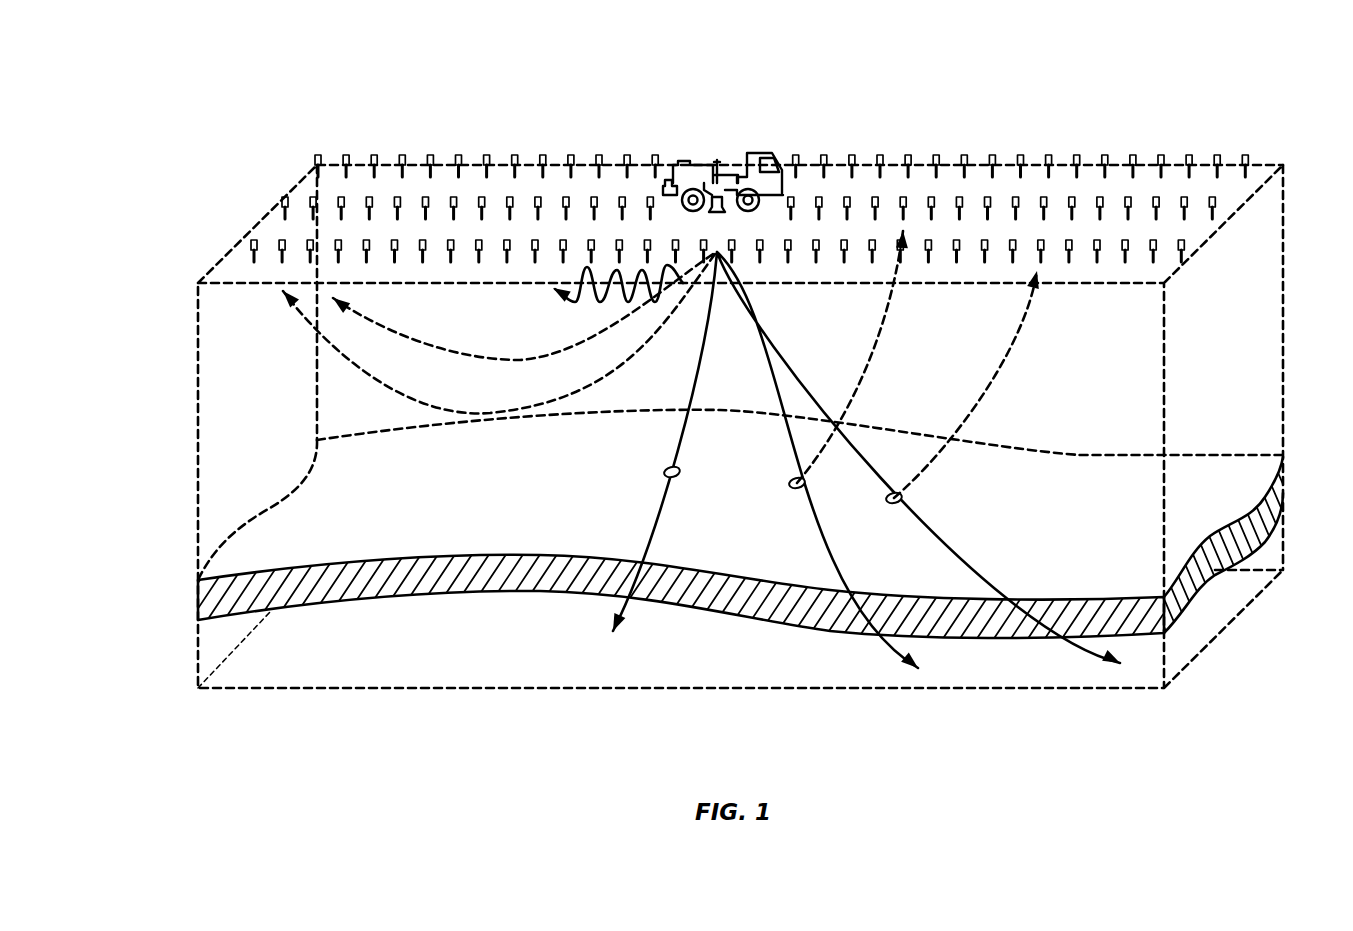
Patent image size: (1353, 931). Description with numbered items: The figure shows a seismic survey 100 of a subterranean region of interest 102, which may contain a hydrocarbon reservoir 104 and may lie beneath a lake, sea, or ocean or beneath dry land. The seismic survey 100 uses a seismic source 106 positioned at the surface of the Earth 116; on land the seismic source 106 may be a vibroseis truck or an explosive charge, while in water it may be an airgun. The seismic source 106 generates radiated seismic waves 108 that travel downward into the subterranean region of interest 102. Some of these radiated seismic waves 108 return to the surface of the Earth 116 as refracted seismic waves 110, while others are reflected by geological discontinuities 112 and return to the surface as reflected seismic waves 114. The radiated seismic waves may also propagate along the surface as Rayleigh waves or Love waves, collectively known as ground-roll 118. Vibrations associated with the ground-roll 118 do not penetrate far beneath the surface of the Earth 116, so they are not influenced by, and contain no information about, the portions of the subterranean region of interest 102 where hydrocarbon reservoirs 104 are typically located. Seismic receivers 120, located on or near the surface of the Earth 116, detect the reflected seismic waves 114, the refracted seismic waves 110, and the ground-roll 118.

The seismic survey 100 is at (1030, 69).
The subterranean region of interest 102 is at (740, 454).
The hydrocarbon reservoir 104 is at (697, 625).
The seismic source 106 is at (753, 161).
The radiated seismic waves 108 is at (811, 499).
The refracted seismic waves 110 is at (471, 333).
The geological discontinuities 112 is at (1206, 575).
The reflected seismic waves 114 is at (961, 364).
The surface of the Earth 116 is at (721, 193).
The ground-roll 118 is at (590, 306).
The seismic receivers 120 is at (749, 189).